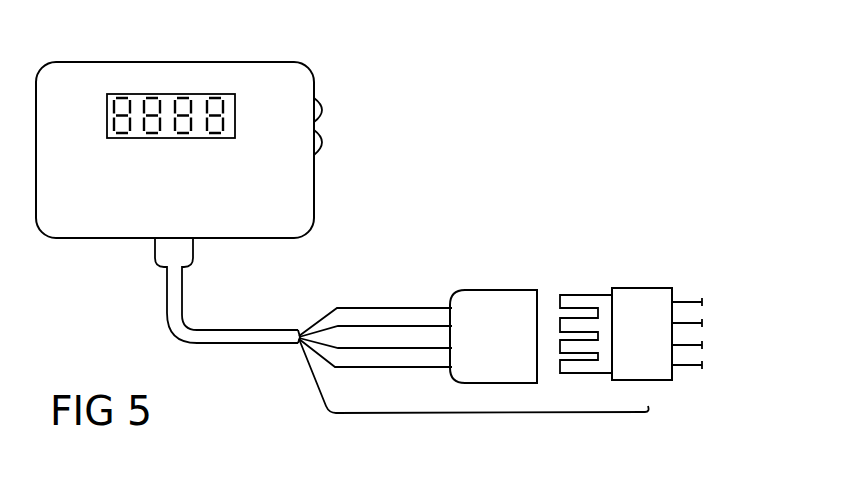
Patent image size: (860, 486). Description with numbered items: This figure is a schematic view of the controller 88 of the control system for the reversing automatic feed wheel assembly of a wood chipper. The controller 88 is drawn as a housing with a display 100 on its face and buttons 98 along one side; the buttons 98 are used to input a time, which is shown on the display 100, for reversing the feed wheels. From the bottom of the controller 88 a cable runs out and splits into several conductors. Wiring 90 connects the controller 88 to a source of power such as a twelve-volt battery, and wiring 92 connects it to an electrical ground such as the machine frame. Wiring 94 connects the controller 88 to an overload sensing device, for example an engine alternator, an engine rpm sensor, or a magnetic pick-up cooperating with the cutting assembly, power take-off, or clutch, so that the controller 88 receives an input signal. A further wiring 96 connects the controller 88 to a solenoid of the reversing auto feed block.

The controller 88 is at (97, 77).
The display 100 is at (236, 107).
The buttons 98 is at (324, 145).
The wiring 94 is at (350, 307).
The wiring 92 is at (414, 325).
The wiring 90 is at (395, 348).
The wiring 96 is at (457, 415).